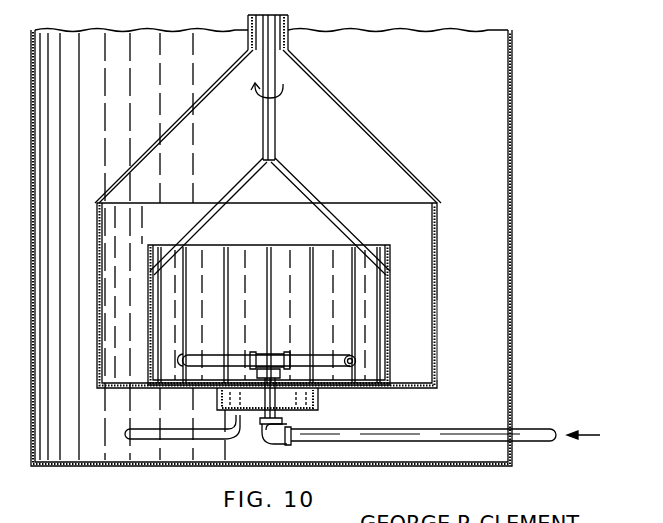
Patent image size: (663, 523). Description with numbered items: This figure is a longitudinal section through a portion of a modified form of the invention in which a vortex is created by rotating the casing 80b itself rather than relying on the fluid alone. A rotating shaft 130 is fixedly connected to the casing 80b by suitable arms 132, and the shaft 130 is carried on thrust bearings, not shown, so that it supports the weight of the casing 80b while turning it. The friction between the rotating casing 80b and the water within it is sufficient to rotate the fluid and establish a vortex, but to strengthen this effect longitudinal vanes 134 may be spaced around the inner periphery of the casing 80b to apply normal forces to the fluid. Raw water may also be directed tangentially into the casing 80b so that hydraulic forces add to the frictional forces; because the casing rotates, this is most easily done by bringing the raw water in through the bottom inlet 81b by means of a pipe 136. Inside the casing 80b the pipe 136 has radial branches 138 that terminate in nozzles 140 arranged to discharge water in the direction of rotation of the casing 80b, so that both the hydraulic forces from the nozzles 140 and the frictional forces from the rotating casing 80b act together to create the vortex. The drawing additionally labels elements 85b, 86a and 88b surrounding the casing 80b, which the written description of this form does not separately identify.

The tank 88b is at (90, 466).
The hopper 85b is at (362, 124).
The rotating shaft 130 is at (276, 122).
The arms 132 is at (236, 190).
The casing 80b is at (390, 292).
The longitudinal vanes 134 is at (152, 283).
The radial branches 138 is at (207, 355).
The nozzles 140 is at (182, 363).
The pipe 136 is at (410, 428).
The bottom inlet 81b is at (306, 400).
The chamber 86a is at (418, 341).